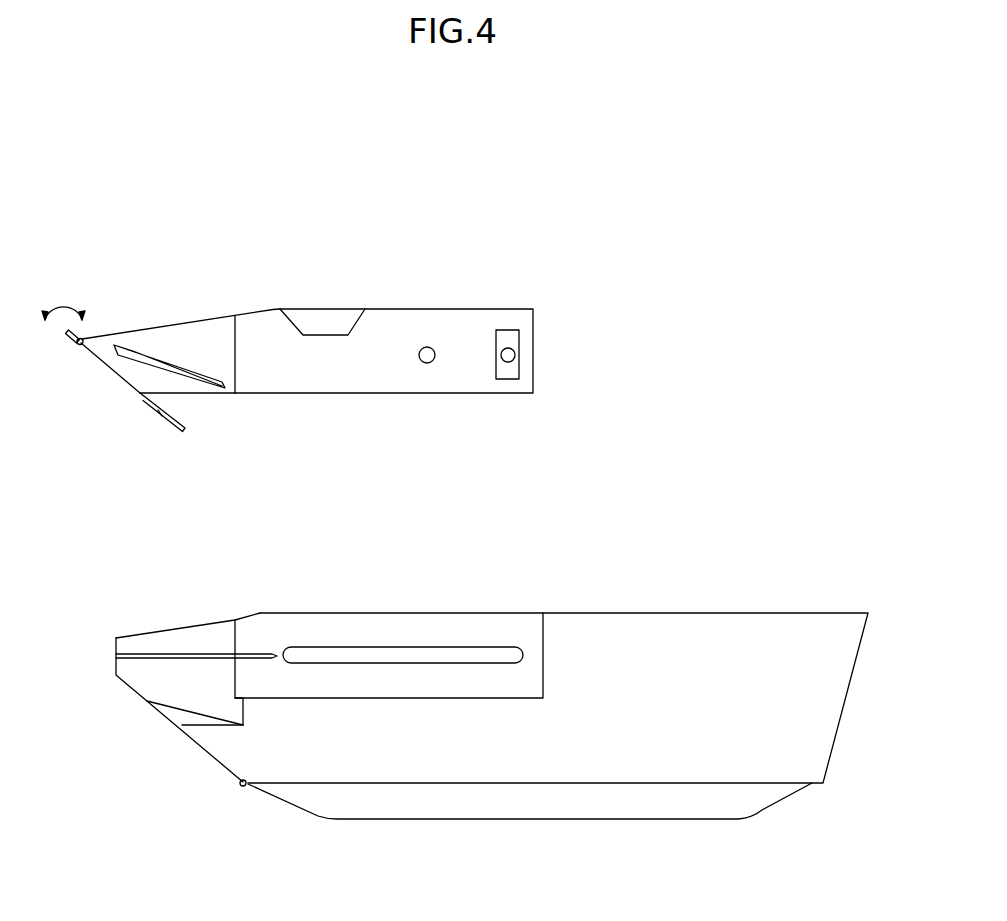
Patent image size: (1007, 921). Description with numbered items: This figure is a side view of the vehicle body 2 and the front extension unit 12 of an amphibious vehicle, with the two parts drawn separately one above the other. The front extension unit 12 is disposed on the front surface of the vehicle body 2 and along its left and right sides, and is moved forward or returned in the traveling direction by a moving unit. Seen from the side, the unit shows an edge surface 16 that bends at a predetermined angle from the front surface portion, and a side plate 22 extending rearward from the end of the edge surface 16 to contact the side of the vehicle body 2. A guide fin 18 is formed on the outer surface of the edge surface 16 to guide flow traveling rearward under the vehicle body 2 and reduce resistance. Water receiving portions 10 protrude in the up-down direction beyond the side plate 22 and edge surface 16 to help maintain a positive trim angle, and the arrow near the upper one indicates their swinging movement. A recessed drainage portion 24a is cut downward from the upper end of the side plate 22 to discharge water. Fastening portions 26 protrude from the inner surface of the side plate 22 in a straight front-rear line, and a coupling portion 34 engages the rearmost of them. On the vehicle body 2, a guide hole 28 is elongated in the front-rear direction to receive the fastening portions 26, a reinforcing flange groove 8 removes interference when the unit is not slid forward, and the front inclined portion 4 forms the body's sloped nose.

The vehicle body 2 is at (727, 637).
The front inclined portion 4 is at (202, 623).
The reinforcing flange groove 8 is at (138, 655).
The water receiving portion 10 is at (68, 338).
The front extension unit 12 is at (110, 373).
The edge surface 16 is at (197, 330).
The guide fin 18 is at (147, 353).
The side plate 22 is at (393, 320).
The recessed drainage portion 24a is at (327, 333).
The fastening portion 26 is at (428, 353).
The guide hole 28 is at (386, 652).
The coupling portion 34 is at (520, 335).